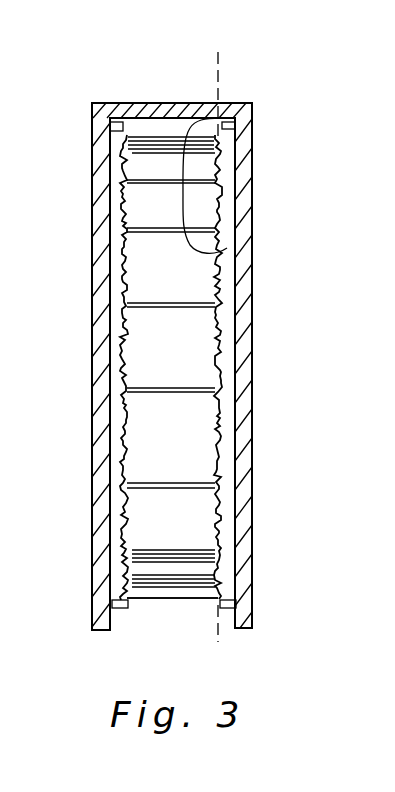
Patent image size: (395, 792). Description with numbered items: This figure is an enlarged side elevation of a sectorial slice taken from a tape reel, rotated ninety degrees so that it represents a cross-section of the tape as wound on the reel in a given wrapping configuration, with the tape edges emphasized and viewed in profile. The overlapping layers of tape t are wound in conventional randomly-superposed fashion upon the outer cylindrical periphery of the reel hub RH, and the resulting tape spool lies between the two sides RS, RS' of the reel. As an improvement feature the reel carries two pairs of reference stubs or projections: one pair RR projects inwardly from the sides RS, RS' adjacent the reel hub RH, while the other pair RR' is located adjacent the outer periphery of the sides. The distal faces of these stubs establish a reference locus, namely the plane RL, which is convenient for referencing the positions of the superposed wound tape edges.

The reel hub RH is at (162, 103).
The reel side RS is at (133, 359).
The reel side RS' is at (276, 380).
The reference stubs RR is at (218, 103).
The reference stubs RR' is at (182, 577).
The reference plane RL is at (220, 349).
The tape t is at (167, 608).